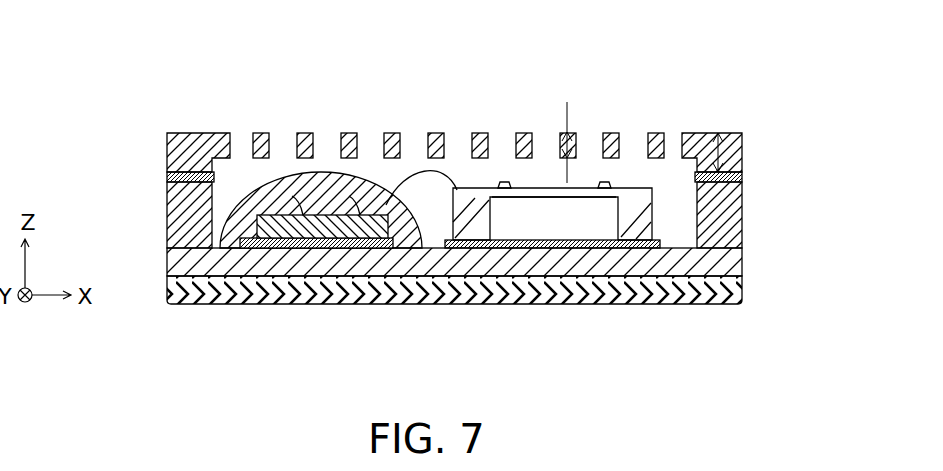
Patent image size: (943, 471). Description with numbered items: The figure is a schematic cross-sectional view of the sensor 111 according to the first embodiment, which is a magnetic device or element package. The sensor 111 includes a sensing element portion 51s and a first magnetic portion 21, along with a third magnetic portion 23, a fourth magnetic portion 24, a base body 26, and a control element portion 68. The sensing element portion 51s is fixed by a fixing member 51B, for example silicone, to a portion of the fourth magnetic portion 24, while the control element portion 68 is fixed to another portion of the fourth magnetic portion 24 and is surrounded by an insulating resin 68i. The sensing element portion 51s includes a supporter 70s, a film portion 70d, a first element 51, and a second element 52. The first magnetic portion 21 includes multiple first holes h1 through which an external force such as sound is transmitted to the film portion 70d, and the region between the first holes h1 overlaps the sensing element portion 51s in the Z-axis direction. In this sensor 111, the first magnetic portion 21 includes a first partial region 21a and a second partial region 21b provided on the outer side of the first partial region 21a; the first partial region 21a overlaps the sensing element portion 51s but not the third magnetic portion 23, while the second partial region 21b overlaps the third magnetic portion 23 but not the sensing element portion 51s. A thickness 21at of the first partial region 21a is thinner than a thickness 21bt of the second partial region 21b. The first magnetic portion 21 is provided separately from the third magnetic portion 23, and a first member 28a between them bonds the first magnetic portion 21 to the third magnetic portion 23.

The sensor 111 is at (773, 103).
The first magnetic portion 21 is at (742, 147).
The first partial region 21a is at (213, 100).
The second partial region 21b is at (742, 98).
The thickness of first partial region 21at is at (577, 145).
The thickness of second partial region 21bt is at (742, 153).
The first member 28a is at (167, 176).
The third magnetic portion 23 is at (190, 212).
The fourth magnetic portion 24 is at (718, 263).
The base body 26 is at (727, 290).
The insulating resin 68i is at (238, 240).
The control element portion 68 is at (318, 222).
The supporter 70s is at (445, 243).
The second element 52 is at (500, 184).
The film portion 70d is at (557, 198).
The first element 51 is at (601, 185).
The fixing member 51B is at (621, 195).
The sensing element portion 51s is at (652, 357).
The first hole h1 is at (631, 143).